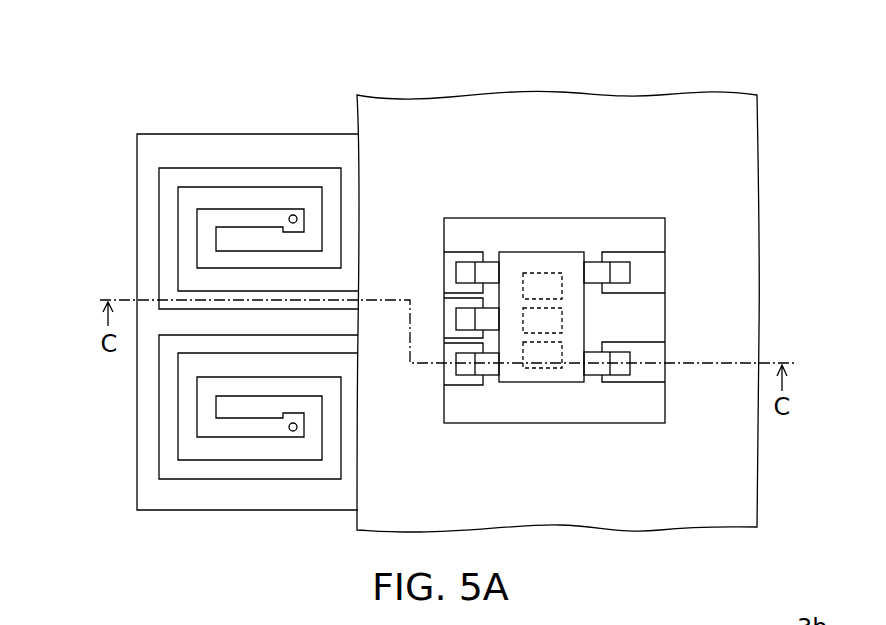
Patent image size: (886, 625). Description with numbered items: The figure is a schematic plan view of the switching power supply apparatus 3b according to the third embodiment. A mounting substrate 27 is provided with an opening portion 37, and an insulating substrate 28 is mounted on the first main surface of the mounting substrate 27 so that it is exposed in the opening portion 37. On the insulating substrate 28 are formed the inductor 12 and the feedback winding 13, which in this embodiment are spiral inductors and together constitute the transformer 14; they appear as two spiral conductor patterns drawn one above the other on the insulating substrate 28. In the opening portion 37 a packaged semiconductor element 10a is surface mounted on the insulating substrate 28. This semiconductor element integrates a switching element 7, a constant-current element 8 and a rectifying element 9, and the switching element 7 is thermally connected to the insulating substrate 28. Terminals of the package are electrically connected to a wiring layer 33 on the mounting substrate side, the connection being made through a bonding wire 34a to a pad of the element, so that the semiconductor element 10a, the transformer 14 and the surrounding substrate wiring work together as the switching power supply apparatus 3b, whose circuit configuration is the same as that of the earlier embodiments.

The switching power supply apparatus 3b is at (764, 57).
The mounting substrate 27 is at (728, 185).
The insulating substrate 28 is at (270, 147).
The transformer 14 is at (90, 380).
The feedback winding 13 is at (168, 270).
The inductor 12 is at (167, 435).
The opening portion 37 is at (635, 230).
The semiconductor chip 10a is at (525, 263).
The rectifying element 9 is at (545, 273).
The constant-current element 8 is at (562, 320).
The switching element 7 is at (550, 367).
The wiring layer 33 is at (653, 373).
The electrode pad 34a is at (593, 368).